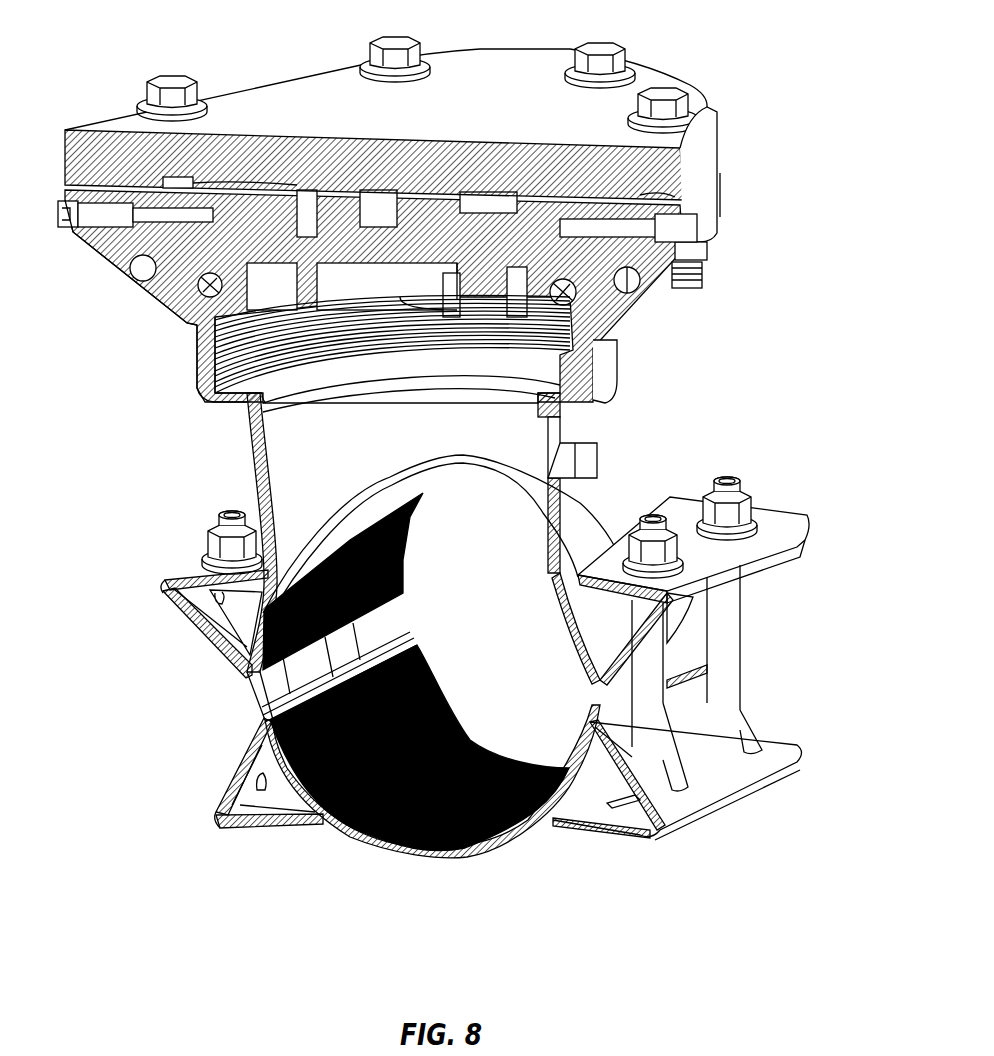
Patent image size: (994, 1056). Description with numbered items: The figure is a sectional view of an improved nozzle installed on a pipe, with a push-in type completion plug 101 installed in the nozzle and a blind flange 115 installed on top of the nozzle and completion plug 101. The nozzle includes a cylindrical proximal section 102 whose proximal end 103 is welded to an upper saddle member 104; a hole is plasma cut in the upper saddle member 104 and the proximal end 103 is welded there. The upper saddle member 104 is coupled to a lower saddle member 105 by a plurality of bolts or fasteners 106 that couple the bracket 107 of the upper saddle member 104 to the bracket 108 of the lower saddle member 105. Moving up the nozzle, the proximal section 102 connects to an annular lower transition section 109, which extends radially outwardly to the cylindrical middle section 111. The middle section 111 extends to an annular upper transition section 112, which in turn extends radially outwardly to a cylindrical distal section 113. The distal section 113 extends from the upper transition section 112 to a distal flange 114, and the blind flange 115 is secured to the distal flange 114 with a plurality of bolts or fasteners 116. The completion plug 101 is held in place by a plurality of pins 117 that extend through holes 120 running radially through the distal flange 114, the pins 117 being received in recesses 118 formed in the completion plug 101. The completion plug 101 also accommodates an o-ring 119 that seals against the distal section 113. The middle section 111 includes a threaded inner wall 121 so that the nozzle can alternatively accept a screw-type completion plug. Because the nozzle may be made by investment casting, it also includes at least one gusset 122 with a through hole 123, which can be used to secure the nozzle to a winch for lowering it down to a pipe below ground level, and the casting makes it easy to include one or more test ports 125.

The completion plug 101 is at (287, 172).
The proximal section 102 is at (253, 457).
The proximal end 103 is at (280, 476).
The upper saddle member 104 is at (645, 470).
The lower saddle member 105 is at (473, 860).
The bolts or fasteners 106 is at (647, 697).
The bracket 107 is at (775, 515).
The bracket 108 is at (720, 773).
The lower transition section 109 is at (220, 403).
The middle section 111 is at (197, 367).
The upper transition section 112 is at (197, 320).
The distal section 113 is at (580, 288).
The distal flange 114 is at (710, 227).
The blind flange 115 is at (482, 67).
The bolts or fasteners 116 is at (605, 43).
The pins 117 is at (105, 212).
The recesses 118 is at (195, 186).
The o-ring 119 is at (203, 288).
The holes 120 is at (680, 200).
The threaded inner wall 121 is at (267, 358).
The gusset 122 is at (687, 285).
The through hole 123 is at (658, 273).
The test ports 125 is at (573, 450).